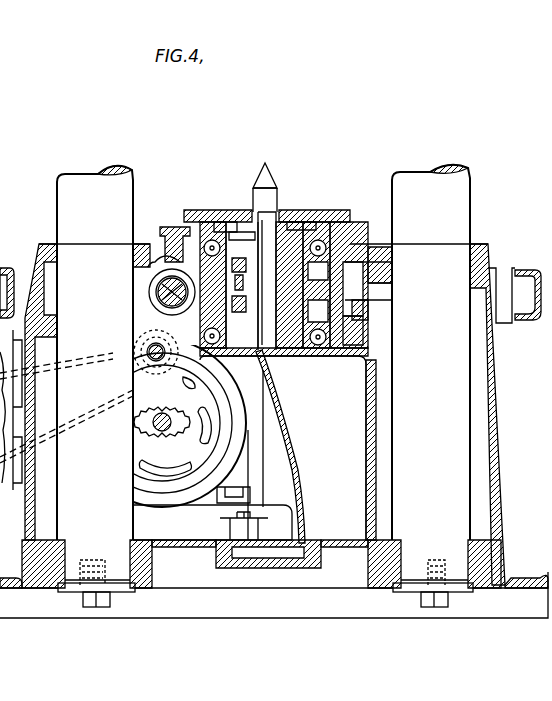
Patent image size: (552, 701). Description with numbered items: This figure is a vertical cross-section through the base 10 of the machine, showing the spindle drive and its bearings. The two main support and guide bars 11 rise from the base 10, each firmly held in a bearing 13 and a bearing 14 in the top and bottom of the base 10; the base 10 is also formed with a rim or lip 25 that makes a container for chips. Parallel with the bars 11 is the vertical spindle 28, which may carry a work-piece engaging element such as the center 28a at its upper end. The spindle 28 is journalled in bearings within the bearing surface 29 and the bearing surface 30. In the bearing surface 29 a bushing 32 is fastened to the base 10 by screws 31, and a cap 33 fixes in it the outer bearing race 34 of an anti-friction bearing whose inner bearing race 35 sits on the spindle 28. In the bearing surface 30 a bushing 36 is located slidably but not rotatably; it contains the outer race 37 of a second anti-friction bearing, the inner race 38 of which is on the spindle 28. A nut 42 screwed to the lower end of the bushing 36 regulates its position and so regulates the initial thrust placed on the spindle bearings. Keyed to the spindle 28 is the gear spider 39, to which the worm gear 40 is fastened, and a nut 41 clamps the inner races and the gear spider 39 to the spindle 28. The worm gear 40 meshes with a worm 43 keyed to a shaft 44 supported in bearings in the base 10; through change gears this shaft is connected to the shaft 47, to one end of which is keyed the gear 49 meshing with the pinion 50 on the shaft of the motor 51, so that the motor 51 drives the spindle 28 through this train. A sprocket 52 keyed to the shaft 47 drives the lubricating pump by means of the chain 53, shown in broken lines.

The base 10 is at (274, 431).
The posts or bars 11 is at (263, 352).
The bearing 13 is at (40, 249).
The bearing 14 is at (48, 585).
The rim or lip 25 is at (532, 271).
The vertical spindle 28 is at (284, 340).
The center 28a is at (268, 188).
The bearing surface 29 is at (352, 240).
The bearing surface 30 is at (366, 340).
The screws 31 is at (165, 232).
The bushing 32 is at (333, 214).
The cap 33 is at (316, 222).
The outer bearing race 34 is at (392, 262).
The inner bearing race 35 is at (230, 258).
The bushing 36 is at (366, 346).
The outer race 37 is at (322, 356).
The inner race 38 is at (302, 324).
The gear spider 39 is at (300, 295).
The worm gear 40 is at (385, 296).
The nut 41 is at (302, 345).
The nut 42 is at (372, 378).
The worm 43 is at (158, 285).
The shaft 44 is at (160, 293).
The shaft 47 is at (204, 410).
The gear 49 is at (152, 403).
The pinion 50 is at (150, 440).
The motor 51 is at (177, 464).
The sprocket 52 is at (148, 352).
The chain 53 is at (66, 408).